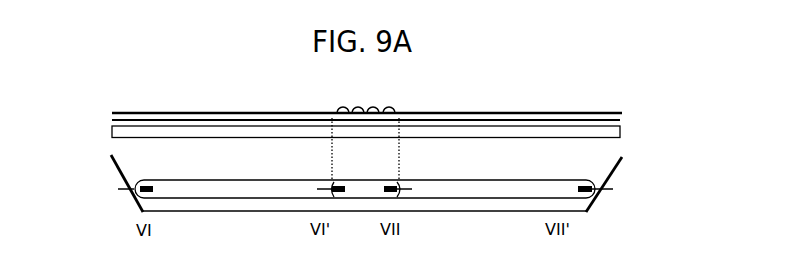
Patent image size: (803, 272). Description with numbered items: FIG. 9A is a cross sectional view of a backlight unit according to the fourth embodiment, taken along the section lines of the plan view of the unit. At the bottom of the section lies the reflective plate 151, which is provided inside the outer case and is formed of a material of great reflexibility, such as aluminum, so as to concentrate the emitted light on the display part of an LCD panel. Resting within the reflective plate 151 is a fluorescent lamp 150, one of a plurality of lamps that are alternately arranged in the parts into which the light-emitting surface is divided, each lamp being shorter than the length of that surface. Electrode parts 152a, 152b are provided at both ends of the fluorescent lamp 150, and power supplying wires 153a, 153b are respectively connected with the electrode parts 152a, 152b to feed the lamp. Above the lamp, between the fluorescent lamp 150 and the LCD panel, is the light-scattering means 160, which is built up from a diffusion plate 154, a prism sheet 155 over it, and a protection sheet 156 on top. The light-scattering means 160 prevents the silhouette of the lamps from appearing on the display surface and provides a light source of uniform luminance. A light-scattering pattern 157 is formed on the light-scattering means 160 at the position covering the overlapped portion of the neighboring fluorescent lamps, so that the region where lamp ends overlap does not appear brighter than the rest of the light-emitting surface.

The fluorescent lamp 150 is at (267, 196).
The reflective plate 151 is at (525, 212).
The electrode part 152a is at (152, 192).
The electrode part 152b is at (390, 192).
The power supplying wire 153a is at (121, 191).
The power supplying wire 153b is at (403, 193).
The diffusion plate 154 is at (620, 131).
The prism sheet 155 is at (620, 120).
The protection sheet 156 is at (622, 113).
The light-scattering pattern 157 is at (390, 108).
The light-scattering means 160 is at (415, 118).